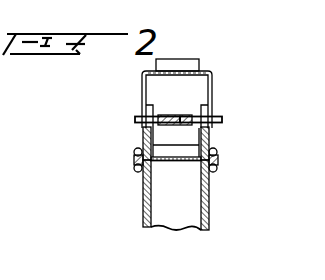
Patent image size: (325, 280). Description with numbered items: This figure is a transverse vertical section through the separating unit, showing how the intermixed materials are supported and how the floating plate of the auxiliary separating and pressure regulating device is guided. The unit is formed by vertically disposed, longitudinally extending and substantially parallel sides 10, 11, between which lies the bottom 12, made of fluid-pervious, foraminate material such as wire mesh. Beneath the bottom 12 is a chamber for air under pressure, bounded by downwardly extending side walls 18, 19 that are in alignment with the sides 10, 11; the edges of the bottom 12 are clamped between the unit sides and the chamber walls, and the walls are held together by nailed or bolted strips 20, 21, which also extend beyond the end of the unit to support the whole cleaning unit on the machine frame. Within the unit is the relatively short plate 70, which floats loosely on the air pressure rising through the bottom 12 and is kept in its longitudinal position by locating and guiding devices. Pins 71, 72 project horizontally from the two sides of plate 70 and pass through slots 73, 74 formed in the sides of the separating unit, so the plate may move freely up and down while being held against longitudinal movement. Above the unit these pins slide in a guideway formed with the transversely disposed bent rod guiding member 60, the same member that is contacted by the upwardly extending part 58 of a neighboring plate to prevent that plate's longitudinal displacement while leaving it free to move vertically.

The upwardly extending part 58 is at (194, 60).
The guiding member 60 is at (212, 84).
The plate 70 is at (175, 115).
The pin 71 is at (135, 119).
The pin 72 is at (222, 120).
The slot 73 is at (146, 107).
The slot 74 is at (208, 108).
The side 10 is at (143, 146).
The side 11 is at (209, 143).
The bottom 12 is at (181, 162).
The side wall 18 is at (143, 204).
The side wall 19 is at (209, 205).
The strip 20 is at (134, 157).
The strip 21 is at (217, 159).